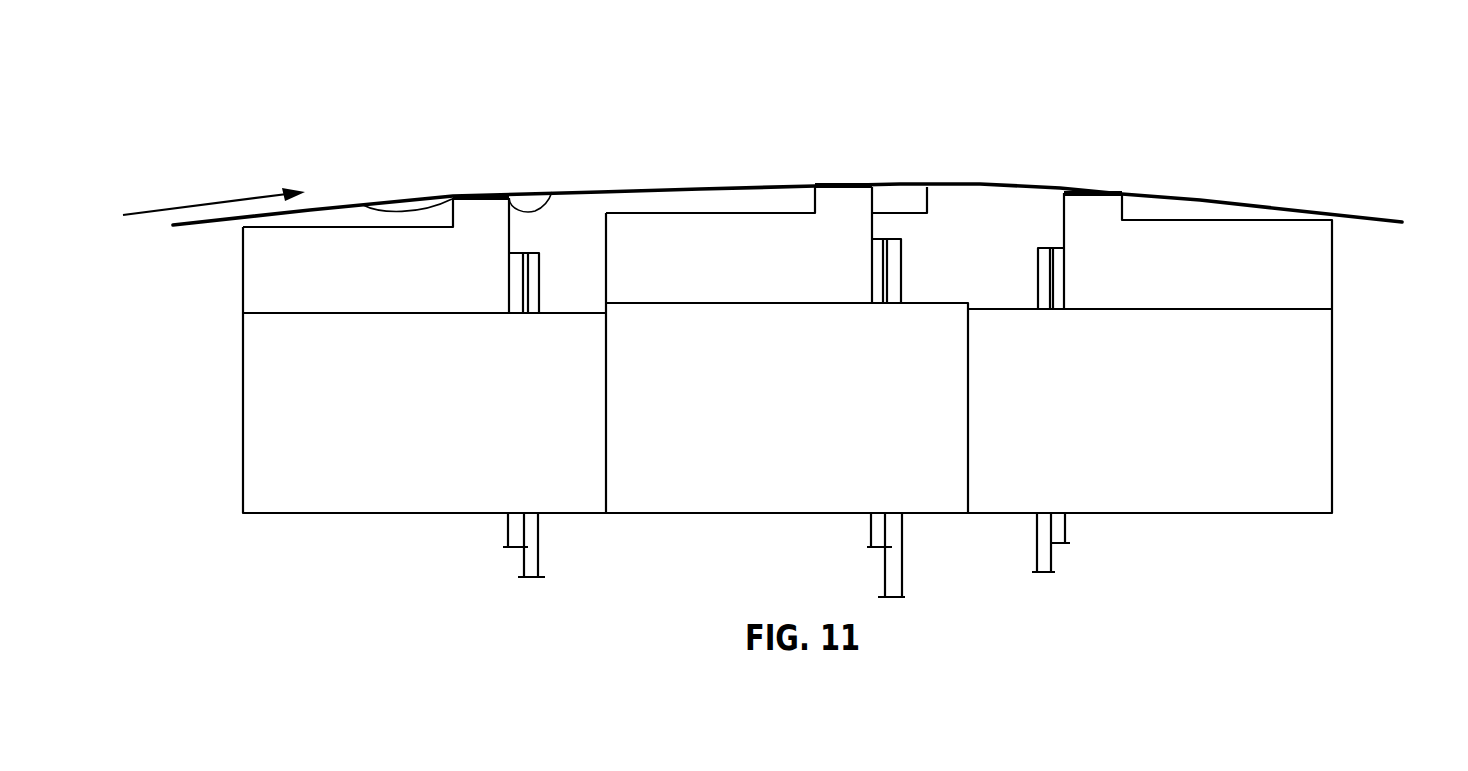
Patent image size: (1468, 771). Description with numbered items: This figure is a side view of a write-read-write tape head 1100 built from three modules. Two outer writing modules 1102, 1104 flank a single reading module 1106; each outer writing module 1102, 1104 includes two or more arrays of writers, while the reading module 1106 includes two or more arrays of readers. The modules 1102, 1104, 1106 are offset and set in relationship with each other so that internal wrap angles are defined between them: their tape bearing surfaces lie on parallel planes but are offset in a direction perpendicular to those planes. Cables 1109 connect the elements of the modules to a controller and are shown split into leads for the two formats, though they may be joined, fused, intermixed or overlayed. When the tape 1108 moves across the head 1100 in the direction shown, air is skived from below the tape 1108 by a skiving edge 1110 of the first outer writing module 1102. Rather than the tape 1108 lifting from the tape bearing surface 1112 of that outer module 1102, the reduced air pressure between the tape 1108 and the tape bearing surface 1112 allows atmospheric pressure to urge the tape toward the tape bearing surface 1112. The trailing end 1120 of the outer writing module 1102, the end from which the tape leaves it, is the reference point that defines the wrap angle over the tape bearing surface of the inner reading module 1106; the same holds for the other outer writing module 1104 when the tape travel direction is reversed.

The write-read-write head 1100 is at (627, 148).
The first outer writing module 1102 is at (244, 277).
The second outer writing module 1104 is at (1333, 270).
The reading module 1106 is at (753, 213).
The tape 1108 is at (1197, 197).
The cables 1109 is at (541, 535).
The skiving edge 1110 is at (367, 205).
The tape bearing surface 1112 is at (477, 195).
The trailing end 1120 is at (552, 192).